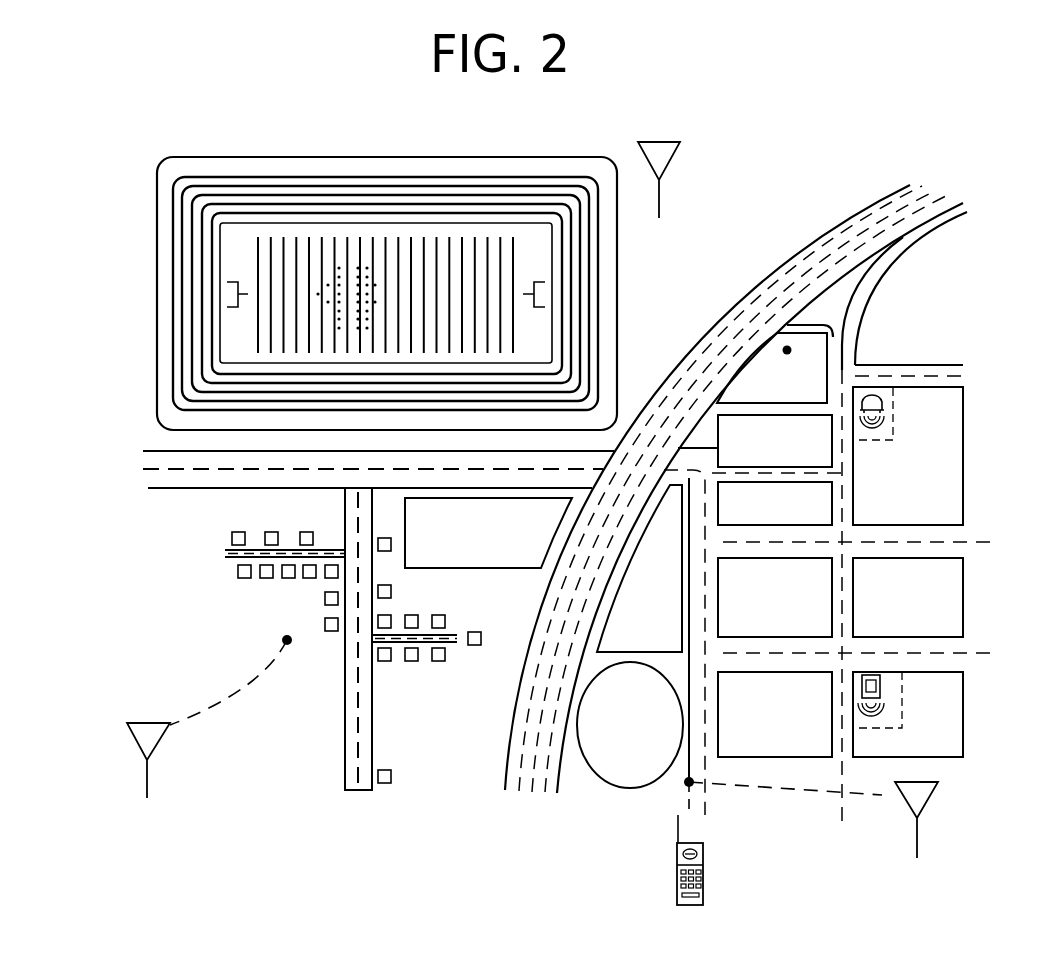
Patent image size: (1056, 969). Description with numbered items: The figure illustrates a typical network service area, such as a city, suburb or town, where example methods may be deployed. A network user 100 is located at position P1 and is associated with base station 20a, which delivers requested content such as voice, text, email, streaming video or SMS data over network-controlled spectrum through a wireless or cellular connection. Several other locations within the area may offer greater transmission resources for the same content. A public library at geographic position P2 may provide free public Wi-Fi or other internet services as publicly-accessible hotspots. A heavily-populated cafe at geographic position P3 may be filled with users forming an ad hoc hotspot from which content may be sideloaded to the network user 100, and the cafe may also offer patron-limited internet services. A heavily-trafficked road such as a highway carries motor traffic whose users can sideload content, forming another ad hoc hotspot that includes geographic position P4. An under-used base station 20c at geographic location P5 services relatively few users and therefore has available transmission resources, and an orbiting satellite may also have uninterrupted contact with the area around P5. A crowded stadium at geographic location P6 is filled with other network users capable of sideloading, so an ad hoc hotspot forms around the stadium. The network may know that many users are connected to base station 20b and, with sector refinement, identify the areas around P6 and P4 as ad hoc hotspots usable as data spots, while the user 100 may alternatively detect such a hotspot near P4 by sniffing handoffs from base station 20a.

The base station 20a is at (917, 835).
The base station 20b is at (663, 183).
The under-used base station 20c is at (147, 778).
The network user 100 is at (703, 878).
The location of network user P1 is at (689, 782).
The geographic position of public library P2 is at (902, 700).
The geographic position of cafe P3 is at (893, 423).
The geographic position along heavily-trafficked road P4 is at (786, 355).
The geographic location of under-used base station P5 is at (287, 640).
The geographic location of stadium P6 is at (618, 362).